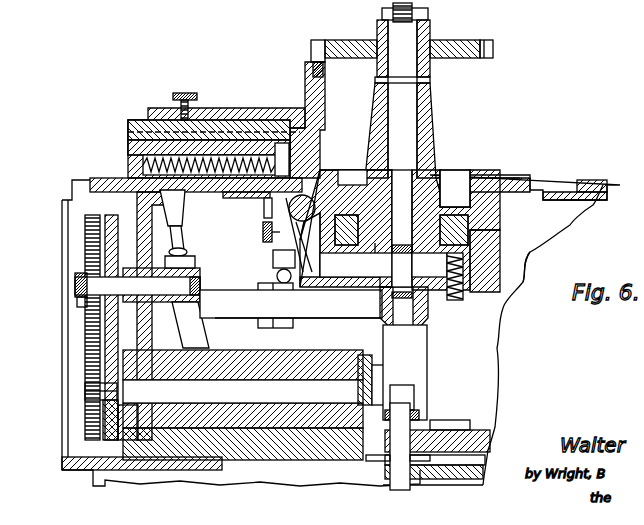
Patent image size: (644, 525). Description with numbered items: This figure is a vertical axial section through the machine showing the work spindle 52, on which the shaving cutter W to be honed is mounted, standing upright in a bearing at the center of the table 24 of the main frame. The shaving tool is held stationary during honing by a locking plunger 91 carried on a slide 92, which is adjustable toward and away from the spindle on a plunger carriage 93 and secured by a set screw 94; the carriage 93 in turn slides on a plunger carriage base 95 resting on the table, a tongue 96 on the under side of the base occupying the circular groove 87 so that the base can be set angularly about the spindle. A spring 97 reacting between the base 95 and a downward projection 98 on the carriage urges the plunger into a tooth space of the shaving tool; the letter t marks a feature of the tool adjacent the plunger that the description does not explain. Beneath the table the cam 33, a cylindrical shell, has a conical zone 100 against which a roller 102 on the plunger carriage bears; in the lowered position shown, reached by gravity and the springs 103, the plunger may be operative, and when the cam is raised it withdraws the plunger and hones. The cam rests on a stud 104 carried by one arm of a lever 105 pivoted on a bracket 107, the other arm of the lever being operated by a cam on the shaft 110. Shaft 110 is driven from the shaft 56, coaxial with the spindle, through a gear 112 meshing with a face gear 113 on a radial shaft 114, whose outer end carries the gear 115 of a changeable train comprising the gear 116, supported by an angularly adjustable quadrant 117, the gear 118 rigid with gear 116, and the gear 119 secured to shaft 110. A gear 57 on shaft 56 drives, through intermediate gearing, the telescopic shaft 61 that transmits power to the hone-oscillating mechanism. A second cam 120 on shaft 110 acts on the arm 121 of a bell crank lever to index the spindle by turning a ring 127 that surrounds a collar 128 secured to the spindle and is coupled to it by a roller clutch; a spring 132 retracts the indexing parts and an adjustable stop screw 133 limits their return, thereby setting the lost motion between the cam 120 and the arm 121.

The table t is at (318, 39).
The shaving cutter W is at (358, 40).
The locking plunger 91 is at (311, 57).
The set screw 94 is at (185, 93).
The slide 92 is at (228, 108).
The plunger carriage 93 is at (258, 128).
The plunger carriage base 95 is at (128, 151).
The downward projection 98 is at (308, 155).
The work spindle 52 is at (437, 119).
The table 24 is at (503, 176).
The circular groove 87 is at (572, 180).
The conical zone 100 is at (500, 226).
The cam 33 is at (525, 258).
The spring 97 is at (185, 214).
The tongue 96 is at (266, 208).
The spring 132 is at (263, 232).
The adjustable stop screw 133 is at (263, 242).
The gear 119 is at (85, 234).
The gear 118 is at (85, 264).
The quadrant 117 is at (131, 266).
The gear 116 is at (105, 328).
The gear 115 is at (105, 413).
The telescopic shaft 61 is at (183, 330).
The arm 121 is at (276, 262).
The second cam 120 is at (264, 328).
The shaft 110 is at (232, 302).
The radial shaft 114 is at (305, 312).
The face gear 113 is at (380, 330).
The roller 102 is at (330, 252).
The collar 128 is at (375, 253).
The springs 103 is at (447, 268).
The ring 127 is at (500, 265).
The stud 104 is at (417, 340).
The lever 105 is at (417, 351).
The bracket 107 is at (415, 377).
The gear 112 is at (425, 420).
The gear 57 is at (468, 430).
The shaft 56 is at (398, 491).